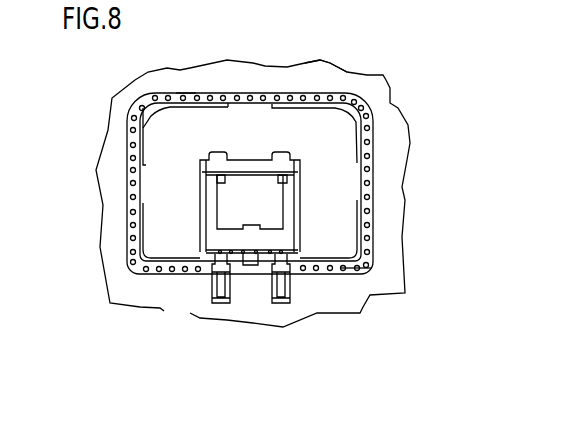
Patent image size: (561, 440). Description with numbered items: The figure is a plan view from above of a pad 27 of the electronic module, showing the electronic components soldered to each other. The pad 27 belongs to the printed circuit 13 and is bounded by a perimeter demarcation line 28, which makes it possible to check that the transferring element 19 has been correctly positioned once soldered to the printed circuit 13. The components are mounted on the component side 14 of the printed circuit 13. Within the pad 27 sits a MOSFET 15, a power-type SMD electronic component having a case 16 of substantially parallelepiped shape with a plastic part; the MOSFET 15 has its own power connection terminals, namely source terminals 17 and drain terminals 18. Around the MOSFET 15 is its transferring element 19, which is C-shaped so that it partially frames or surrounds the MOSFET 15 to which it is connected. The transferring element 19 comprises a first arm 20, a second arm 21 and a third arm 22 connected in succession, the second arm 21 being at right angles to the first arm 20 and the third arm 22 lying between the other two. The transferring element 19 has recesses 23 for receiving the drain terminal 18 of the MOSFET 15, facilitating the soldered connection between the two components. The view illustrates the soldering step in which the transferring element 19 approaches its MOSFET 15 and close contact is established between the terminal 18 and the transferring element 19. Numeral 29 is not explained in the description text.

The printed circuit 13 is at (382, 114).
The component side 14 is at (347, 80).
The MOSFET 15 is at (283, 235).
The case 16 is at (367, 259).
The source terminal 17 is at (282, 283).
The drain terminal 18 is at (250, 225).
The transferring element 19 is at (272, 163).
The first arm 20 is at (172, 155).
The second arm 21 is at (262, 132).
The third arm 22 is at (325, 167).
The recess 23 is at (217, 182).
The pad 27 is at (249, 95).
The perimeter demarcation line 28 is at (185, 94).
The sensor 29 is at (399, 0).